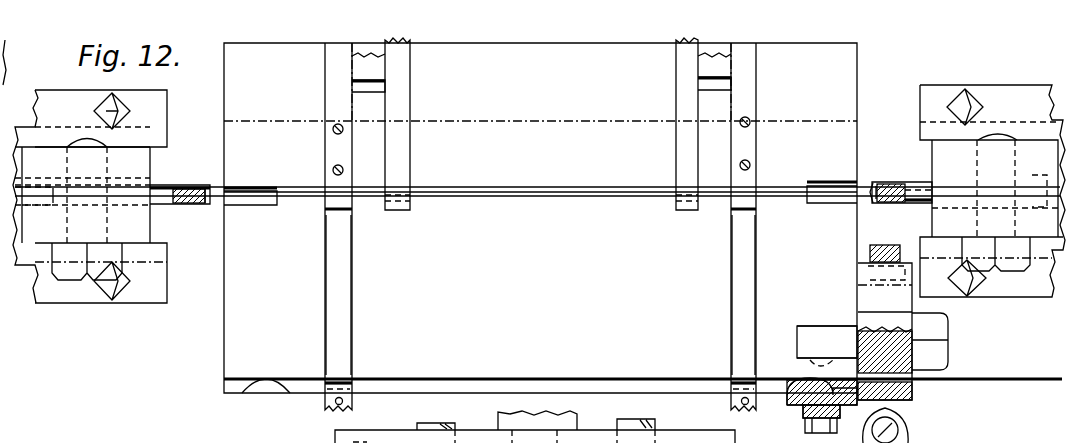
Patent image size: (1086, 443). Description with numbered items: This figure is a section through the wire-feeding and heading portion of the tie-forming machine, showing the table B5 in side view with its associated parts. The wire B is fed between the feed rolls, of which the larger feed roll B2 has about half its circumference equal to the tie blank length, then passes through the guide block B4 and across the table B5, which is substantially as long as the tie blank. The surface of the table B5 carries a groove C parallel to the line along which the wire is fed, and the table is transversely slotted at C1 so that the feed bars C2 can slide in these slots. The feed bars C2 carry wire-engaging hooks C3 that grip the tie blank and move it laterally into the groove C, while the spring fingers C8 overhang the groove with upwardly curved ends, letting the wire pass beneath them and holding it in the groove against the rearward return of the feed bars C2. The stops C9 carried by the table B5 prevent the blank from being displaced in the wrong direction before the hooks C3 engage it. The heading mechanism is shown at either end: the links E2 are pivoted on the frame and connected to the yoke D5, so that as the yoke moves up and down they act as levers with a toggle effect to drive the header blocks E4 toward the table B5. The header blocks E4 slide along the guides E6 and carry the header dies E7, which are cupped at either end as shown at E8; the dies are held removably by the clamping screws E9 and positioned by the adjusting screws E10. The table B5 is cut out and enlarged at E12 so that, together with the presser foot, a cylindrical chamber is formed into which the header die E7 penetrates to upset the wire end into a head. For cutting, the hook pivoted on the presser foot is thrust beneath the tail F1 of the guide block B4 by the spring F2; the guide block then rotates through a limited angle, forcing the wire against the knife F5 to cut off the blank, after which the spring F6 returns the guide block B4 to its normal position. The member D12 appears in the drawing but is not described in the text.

The wire B is at (1030, 381).
The feed roll B2 is at (911, 425).
The guide block B4 is at (858, 308).
The table B5 is at (540, 218).
The groove C is at (512, 185).
The transverse slots C1 is at (325, 303).
The feed bars C2 is at (345, 250).
The wire-engaging hooks C3 is at (340, 382).
The spring fingers C8 is at (400, 103).
The stops C9 is at (262, 388).
The yoke D5 is at (327, 433).
The lower plate block D12 is at (498, 419).
The links E2 is at (822, 180).
The header blocks E4 is at (30, 242).
The guides E6 is at (167, 102).
The header dies E7 is at (165, 187).
The cupped end E8 is at (53, 198).
The clamping screws E9 is at (73, 275).
The adjusting screws E10 is at (40, 182).
The cut-out enlargement E12 is at (255, 185).
The tail F1 is at (337, 209).
The spring F2 is at (378, 67).
The knife F5 is at (853, 386).
The spring F6 is at (908, 410).